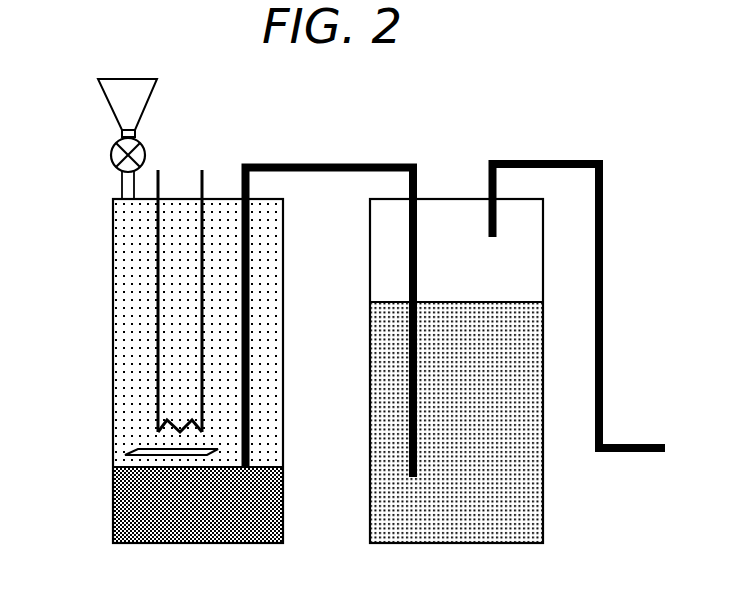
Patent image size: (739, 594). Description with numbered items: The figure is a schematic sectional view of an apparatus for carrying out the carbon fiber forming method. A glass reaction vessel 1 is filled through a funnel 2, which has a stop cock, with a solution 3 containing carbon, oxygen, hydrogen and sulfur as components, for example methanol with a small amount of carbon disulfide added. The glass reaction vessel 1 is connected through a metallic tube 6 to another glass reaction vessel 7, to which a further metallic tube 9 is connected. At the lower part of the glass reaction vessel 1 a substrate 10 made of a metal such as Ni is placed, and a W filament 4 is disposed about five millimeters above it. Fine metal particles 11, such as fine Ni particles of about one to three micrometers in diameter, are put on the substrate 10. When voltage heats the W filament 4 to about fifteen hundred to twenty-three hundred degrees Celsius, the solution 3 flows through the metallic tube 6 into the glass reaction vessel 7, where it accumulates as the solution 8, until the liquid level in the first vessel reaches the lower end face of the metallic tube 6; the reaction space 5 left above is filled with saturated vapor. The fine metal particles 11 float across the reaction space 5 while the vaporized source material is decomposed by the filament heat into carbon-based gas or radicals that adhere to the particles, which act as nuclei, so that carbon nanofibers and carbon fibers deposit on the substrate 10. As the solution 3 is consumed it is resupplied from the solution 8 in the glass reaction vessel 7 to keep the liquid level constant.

The glass reaction vessel 1 is at (113, 262).
The funnel 2 is at (149, 79).
The solution 3 is at (125, 500).
The W filament 4 is at (160, 412).
The reaction space 5 is at (125, 310).
The metallic tube 6 is at (340, 163).
The glass reaction vessel 7 is at (370, 268).
The solution 8 is at (380, 383).
The metallic tube 9 is at (602, 295).
The substrate 10 is at (133, 455).
The fine metal particles 11 is at (138, 365).